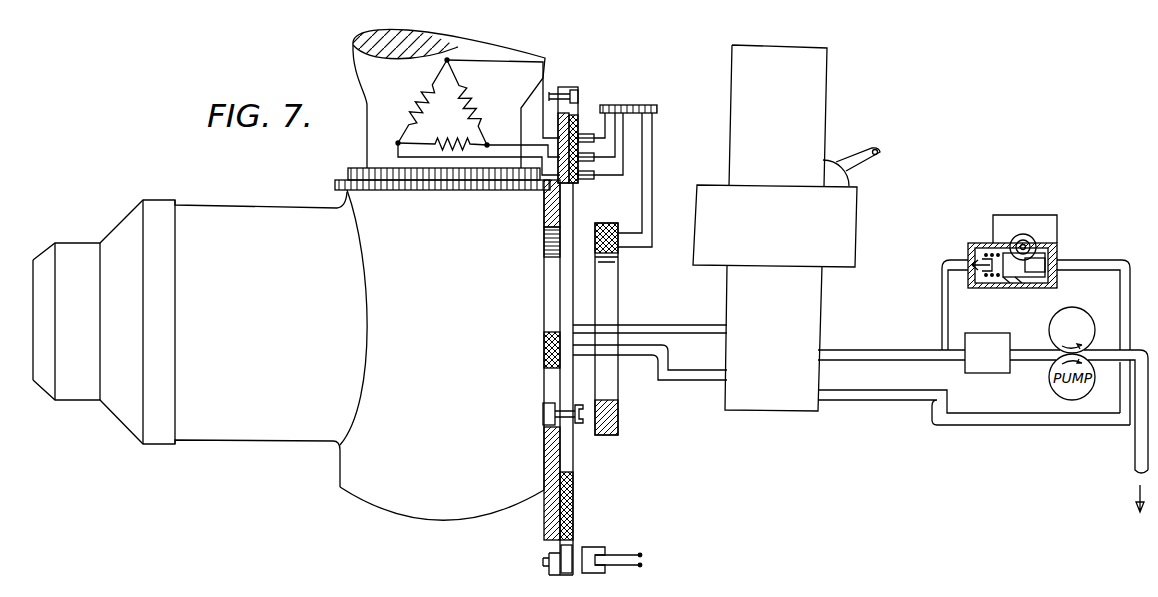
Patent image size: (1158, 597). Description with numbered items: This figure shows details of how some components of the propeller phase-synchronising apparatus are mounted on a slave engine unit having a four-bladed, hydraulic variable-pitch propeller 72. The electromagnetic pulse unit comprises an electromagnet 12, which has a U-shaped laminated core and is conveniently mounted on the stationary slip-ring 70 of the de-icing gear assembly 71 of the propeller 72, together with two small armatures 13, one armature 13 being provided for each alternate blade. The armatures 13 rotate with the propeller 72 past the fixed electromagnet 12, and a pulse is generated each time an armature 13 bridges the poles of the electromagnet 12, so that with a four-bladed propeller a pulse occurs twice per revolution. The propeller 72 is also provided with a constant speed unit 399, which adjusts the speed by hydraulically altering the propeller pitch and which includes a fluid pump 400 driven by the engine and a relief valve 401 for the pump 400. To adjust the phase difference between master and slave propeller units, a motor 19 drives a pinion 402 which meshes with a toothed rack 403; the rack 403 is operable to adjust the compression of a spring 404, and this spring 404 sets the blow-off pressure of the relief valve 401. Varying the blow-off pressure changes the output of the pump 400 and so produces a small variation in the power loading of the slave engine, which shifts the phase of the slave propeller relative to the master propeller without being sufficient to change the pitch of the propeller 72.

The variable-pitch propeller 72 is at (377, 142).
The armature 13 is at (576, 88).
The stationary slip-ring 70 is at (579, 123).
The de-icing gear assembly 71 is at (599, 154).
The electromagnet 12 is at (603, 547).
The constant speed unit 399 is at (812, 297).
The motor 19 is at (1038, 220).
The pinion 402 is at (1033, 236).
The toothed rack 403 is at (1030, 263).
The spring 404 is at (990, 250).
The relief valve 401 is at (1035, 290).
The fluid pump 400 is at (1075, 320).